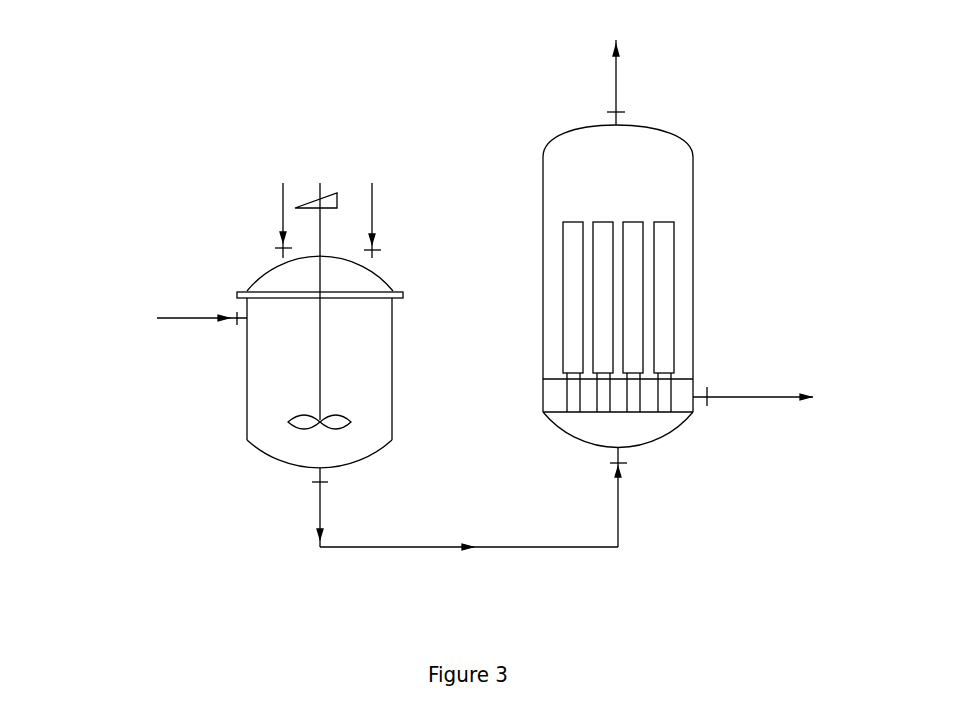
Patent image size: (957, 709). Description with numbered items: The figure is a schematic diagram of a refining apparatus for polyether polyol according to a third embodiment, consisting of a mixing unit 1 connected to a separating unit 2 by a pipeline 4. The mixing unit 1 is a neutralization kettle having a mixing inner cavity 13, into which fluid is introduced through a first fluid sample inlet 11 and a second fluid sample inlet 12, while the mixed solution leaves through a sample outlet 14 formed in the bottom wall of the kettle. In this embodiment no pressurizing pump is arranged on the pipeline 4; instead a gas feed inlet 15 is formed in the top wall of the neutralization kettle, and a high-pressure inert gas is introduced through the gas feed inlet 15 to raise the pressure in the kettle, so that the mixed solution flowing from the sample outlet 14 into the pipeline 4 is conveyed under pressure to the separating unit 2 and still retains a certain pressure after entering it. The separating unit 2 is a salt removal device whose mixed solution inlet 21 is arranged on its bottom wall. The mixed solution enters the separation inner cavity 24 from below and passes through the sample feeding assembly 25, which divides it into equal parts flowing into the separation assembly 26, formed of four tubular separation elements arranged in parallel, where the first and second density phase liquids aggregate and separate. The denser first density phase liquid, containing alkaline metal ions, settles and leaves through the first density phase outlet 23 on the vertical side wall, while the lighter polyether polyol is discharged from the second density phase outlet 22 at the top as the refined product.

The mixing unit 1 is at (259, 299).
The first fluid sample inlet 11 is at (283, 198).
The second fluid sample inlet 12 is at (200, 317).
The mixing inner cavity 13 is at (380, 410).
The sample outlet 14 is at (318, 472).
The gas feed inlet 15 is at (373, 212).
The separating unit 2 is at (551, 293).
The mixed solution inlet 21 is at (620, 453).
The second density phase outlet 22 is at (617, 75).
The first density phase outlet 23 is at (740, 395).
The separation inner cavity 24 is at (663, 173).
The sample feeding assembly 25 is at (678, 413).
The separation assembly 26 is at (672, 297).
The pipeline 4 is at (487, 550).